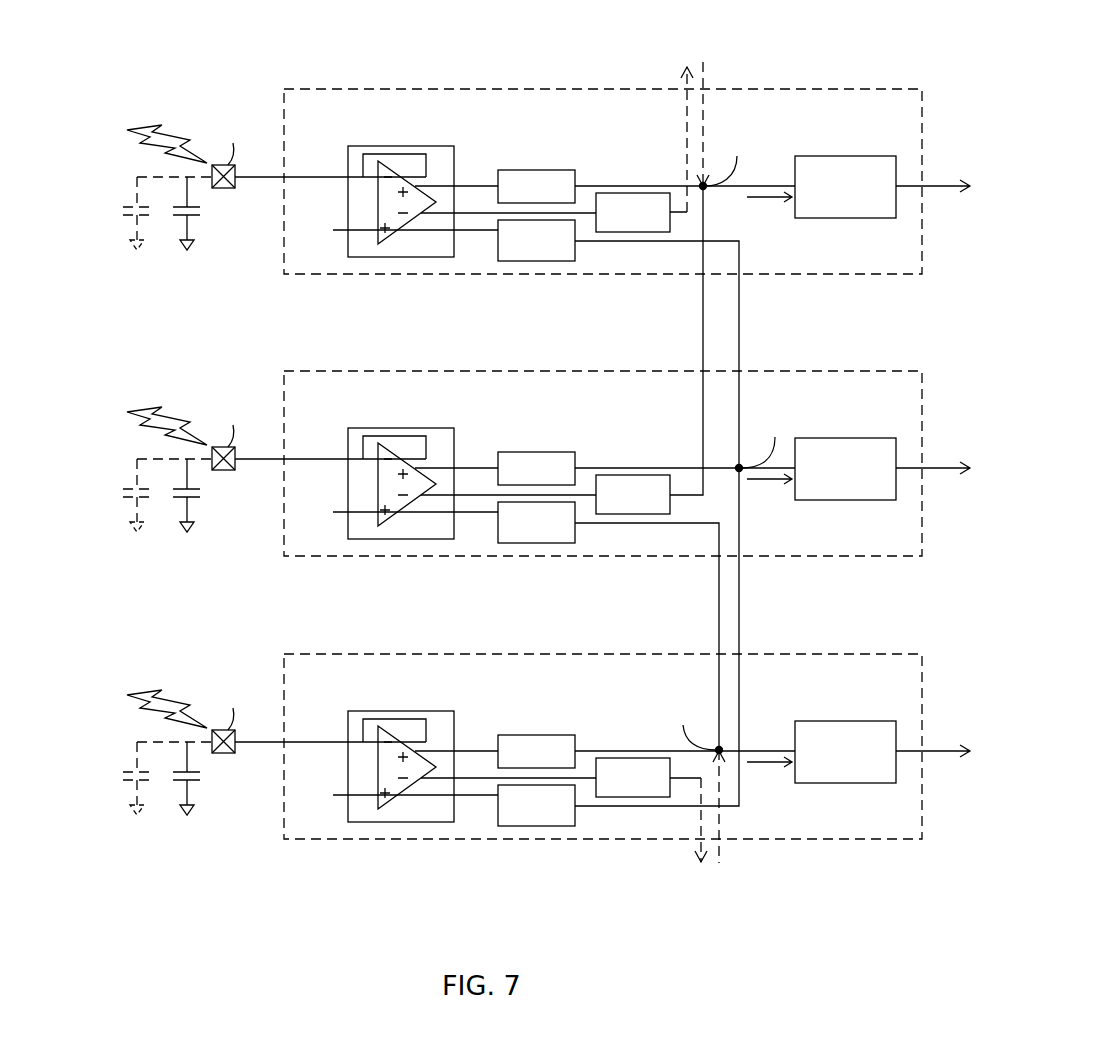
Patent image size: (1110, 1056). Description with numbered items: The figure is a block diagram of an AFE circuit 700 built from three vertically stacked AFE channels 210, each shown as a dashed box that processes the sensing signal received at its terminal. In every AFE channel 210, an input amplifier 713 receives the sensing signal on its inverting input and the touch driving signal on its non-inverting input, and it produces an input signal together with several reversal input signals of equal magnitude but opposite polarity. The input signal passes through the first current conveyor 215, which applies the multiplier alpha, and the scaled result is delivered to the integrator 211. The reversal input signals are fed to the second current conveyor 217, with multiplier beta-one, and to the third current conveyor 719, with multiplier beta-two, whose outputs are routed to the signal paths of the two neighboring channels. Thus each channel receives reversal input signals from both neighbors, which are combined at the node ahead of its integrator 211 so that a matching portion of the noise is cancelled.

The AFE circuit 700 is at (136, 908).
The AFE channel 210 is at (872, 89).
The integrator 211 is at (863, 134).
The first current conveyor 215 is at (543, 170).
The second current conveyor 217 is at (633, 232).
The fully differential operational amplifier 713 is at (412, 146).
The third current conveyor 719 is at (537, 261).